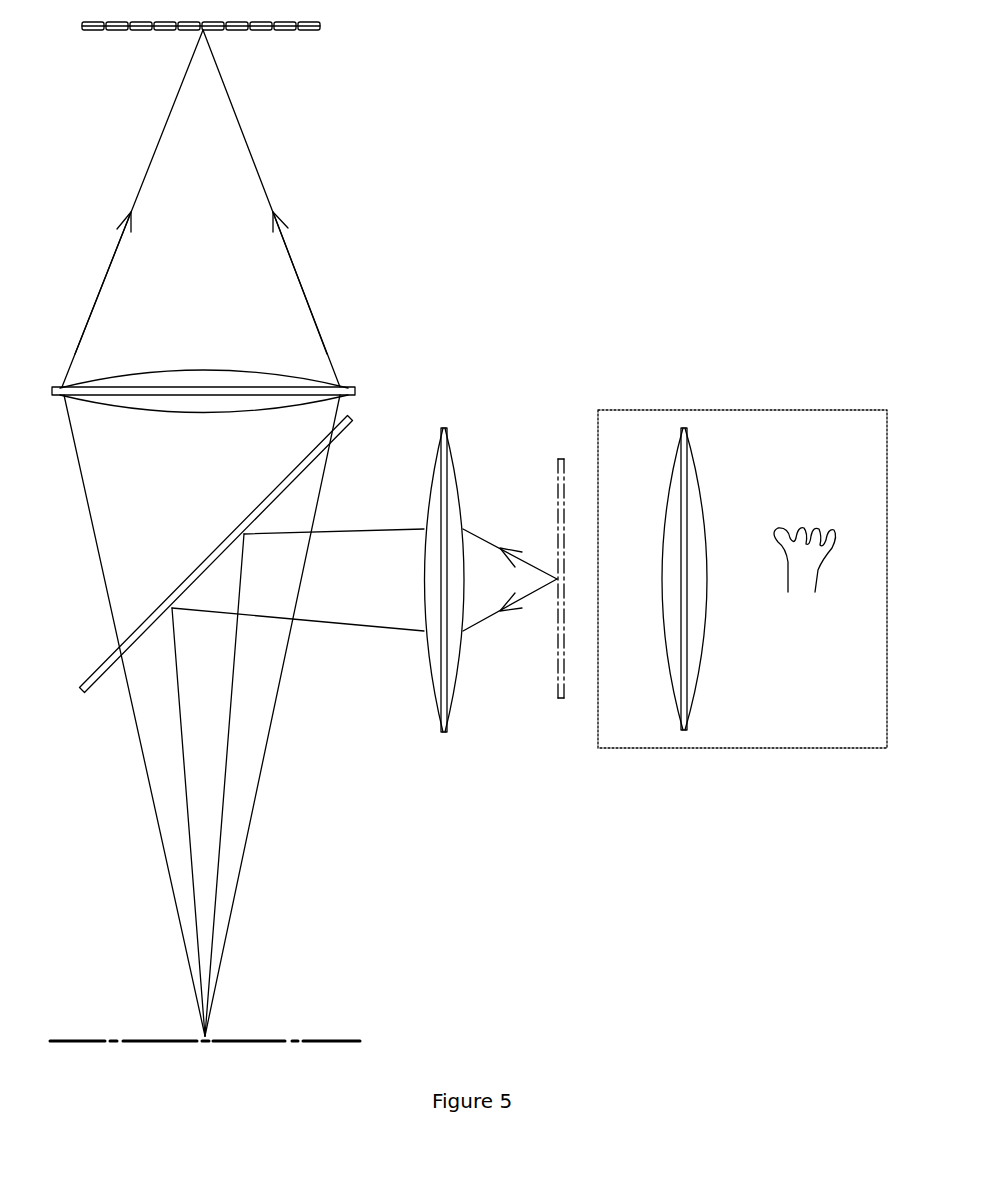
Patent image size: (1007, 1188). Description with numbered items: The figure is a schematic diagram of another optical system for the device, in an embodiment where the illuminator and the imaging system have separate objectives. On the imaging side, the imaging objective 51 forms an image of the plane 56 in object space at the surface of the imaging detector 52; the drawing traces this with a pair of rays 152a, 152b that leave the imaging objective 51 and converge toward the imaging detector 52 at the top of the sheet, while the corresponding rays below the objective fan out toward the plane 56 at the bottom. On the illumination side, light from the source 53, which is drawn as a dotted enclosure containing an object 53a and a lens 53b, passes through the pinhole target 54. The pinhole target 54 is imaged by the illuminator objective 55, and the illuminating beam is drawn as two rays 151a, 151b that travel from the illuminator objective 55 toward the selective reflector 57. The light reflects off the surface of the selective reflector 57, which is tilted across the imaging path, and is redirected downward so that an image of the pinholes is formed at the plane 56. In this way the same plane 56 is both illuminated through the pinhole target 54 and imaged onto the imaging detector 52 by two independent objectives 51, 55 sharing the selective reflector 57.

The imaging detector 52 is at (91, 31).
The light ray 152a is at (105, 290).
The light ray 152b is at (303, 288).
The imaging objective 51 is at (80, 408).
The selective reflector 57 is at (100, 687).
The light beam 151a is at (347, 528).
The light beam 151b is at (331, 628).
The illuminator objective 55 is at (445, 734).
The pinhole target 54 is at (563, 700).
The source 53 is at (802, 750).
The object (hand) 53a is at (818, 573).
The lens 53b is at (698, 692).
The plane 56 is at (63, 1035).